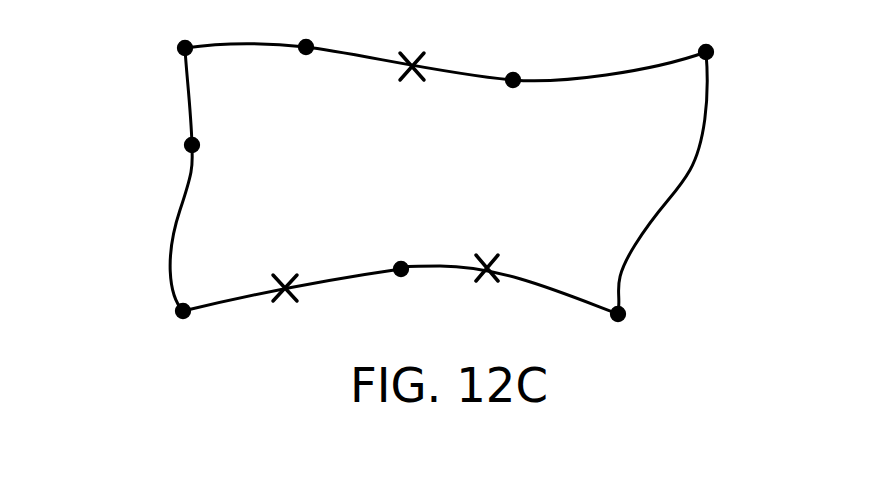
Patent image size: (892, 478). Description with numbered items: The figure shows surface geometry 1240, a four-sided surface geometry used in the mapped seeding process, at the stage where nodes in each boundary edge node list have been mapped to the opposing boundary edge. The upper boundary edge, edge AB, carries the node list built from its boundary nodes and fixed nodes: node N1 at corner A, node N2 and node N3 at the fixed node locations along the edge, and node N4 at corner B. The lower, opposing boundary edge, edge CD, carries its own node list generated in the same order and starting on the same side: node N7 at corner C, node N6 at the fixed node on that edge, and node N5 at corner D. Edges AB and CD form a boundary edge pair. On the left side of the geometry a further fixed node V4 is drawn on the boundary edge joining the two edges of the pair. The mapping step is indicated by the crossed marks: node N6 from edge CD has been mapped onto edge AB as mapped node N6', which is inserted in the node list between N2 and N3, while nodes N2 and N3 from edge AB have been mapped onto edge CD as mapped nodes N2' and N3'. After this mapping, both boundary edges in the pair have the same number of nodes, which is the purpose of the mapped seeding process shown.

The surface geometry 1240 is at (62, 66).
The node N1 is at (171, 34).
The node N2 is at (313, 28).
The node N3 is at (520, 65).
The node N4 is at (726, 41).
The node N5 is at (627, 331).
The node N6 is at (407, 290).
The node N7 is at (187, 329).
The fixed node V4 is at (170, 144).
The mapped node N6' is at (421, 51).
The mapped node N2' is at (290, 305).
The mapped node N3' is at (493, 291).